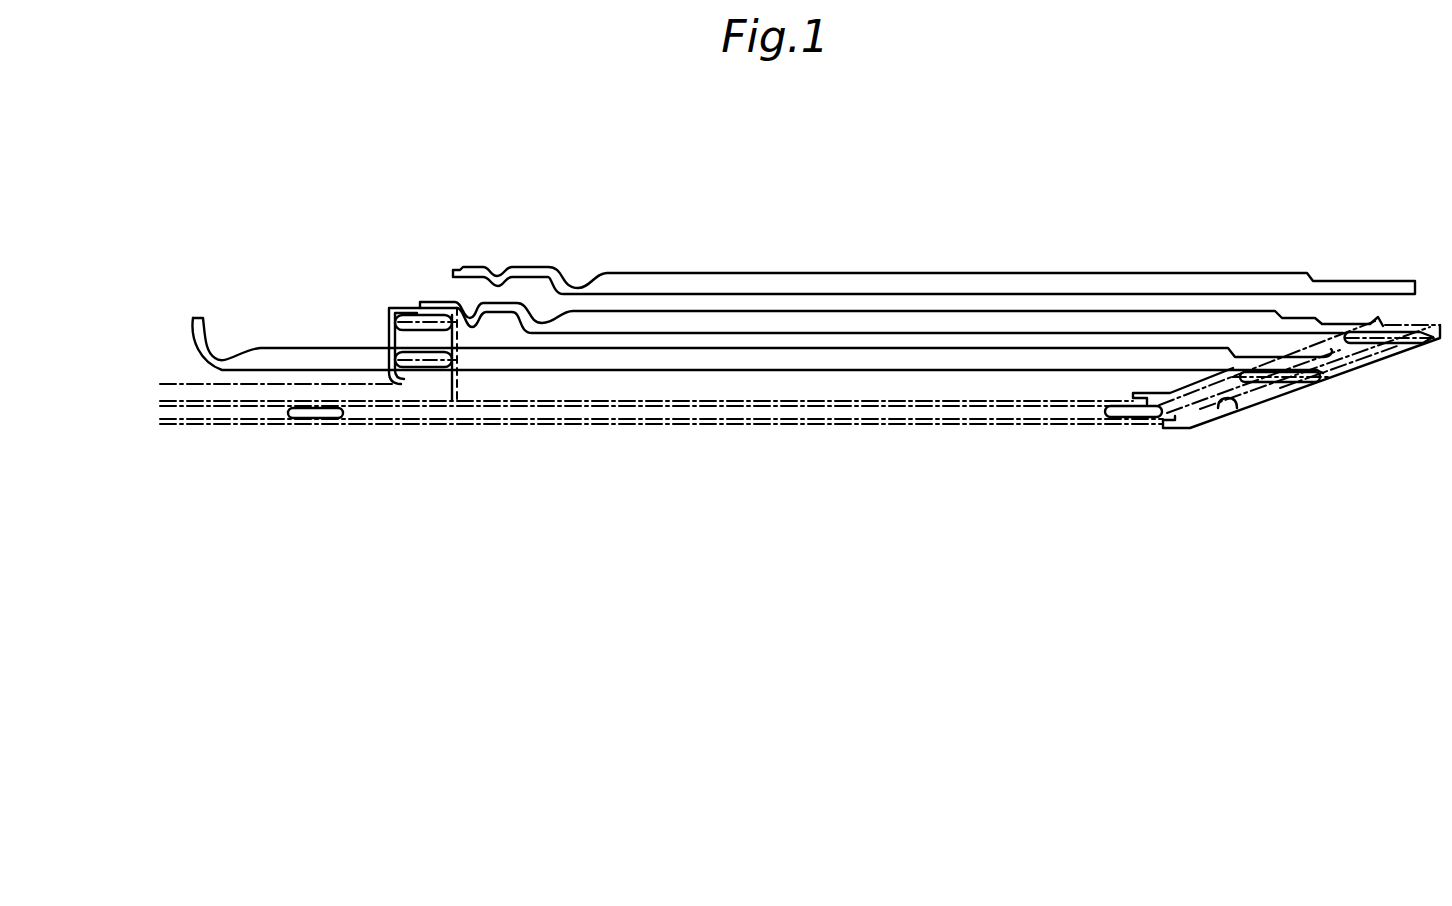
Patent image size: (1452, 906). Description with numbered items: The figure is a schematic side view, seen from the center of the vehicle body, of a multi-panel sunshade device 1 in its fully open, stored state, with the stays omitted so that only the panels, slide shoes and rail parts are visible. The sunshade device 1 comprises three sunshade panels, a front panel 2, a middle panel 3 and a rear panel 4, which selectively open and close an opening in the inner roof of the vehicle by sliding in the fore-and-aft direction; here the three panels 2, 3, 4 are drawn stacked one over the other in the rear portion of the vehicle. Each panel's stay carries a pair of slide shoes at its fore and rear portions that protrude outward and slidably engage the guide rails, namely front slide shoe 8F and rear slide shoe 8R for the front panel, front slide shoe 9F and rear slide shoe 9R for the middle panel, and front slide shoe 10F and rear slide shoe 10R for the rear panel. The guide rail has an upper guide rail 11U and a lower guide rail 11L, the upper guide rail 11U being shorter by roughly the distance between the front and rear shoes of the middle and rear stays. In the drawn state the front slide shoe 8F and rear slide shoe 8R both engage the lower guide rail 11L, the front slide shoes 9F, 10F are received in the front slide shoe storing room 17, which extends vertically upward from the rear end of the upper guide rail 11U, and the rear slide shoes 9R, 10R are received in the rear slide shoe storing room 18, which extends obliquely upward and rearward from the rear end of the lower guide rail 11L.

The sunshade device 1 is at (1152, 213).
The front panel 2 is at (261, 352).
The middle panel 3 is at (823, 320).
The rear panel 4 is at (712, 283).
The front slide shoe 8F is at (343, 418).
The rear slide shoe 8R is at (1104, 410).
The front slide shoe 9F is at (407, 352).
The rear slide shoe 9R is at (1262, 383).
The front slide shoe 10F is at (410, 316).
The rear slide shoe 10R is at (1363, 343).
The upper guide rail 11U is at (200, 388).
The lower guide rail 11L is at (195, 419).
The front slide shoe storing room 17 is at (452, 383).
The rear slide shoe storing room 18 is at (1222, 408).